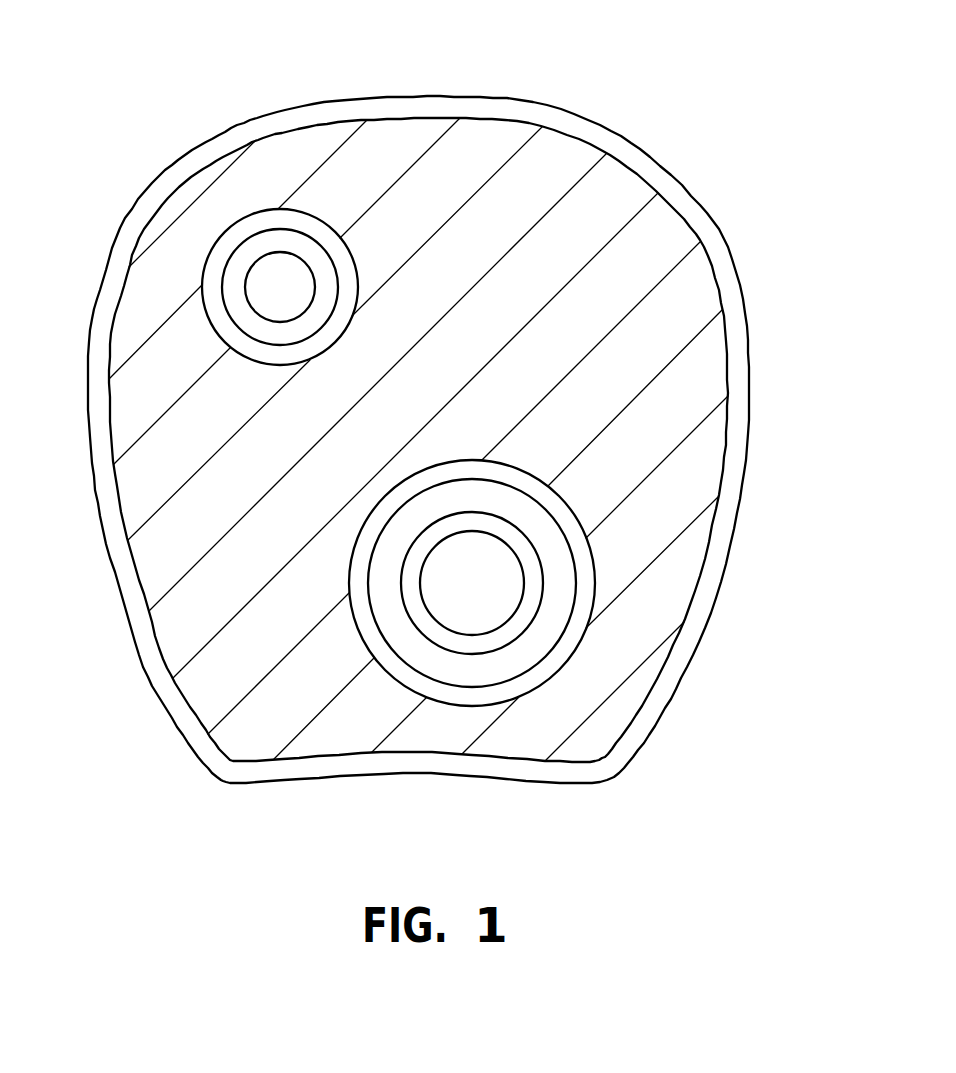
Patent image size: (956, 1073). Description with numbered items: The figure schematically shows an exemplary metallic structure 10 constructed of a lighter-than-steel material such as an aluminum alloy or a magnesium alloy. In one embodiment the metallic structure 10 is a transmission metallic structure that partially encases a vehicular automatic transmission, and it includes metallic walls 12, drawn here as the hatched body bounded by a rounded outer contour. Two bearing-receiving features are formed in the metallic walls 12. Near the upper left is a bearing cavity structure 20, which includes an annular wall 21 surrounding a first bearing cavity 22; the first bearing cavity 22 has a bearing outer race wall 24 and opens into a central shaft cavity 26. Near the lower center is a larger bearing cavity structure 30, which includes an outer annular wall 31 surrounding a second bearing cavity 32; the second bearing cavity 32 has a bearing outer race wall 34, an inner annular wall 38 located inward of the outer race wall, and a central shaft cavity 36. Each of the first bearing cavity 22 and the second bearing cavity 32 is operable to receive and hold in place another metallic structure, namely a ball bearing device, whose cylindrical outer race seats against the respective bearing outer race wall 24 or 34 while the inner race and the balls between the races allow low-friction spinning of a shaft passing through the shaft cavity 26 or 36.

The metallic structure 10 is at (650, 163).
The metallic walls 12 is at (645, 350).
The bearing cavity structure 20 is at (267, 190).
The annular wall 21 is at (347, 280).
The first bearing cavity 22 is at (245, 257).
The bearing outer race wall 24 is at (236, 280).
The shaft cavity 26 is at (283, 277).
The bearing cavity structure 30 is at (432, 638).
The outer annular wall 31 is at (413, 680).
The second bearing cavity 32 is at (557, 600).
The bearing outer race wall 34 is at (515, 670).
The shaft cavity 36 is at (450, 590).
The inner annular wall 38 is at (527, 533).